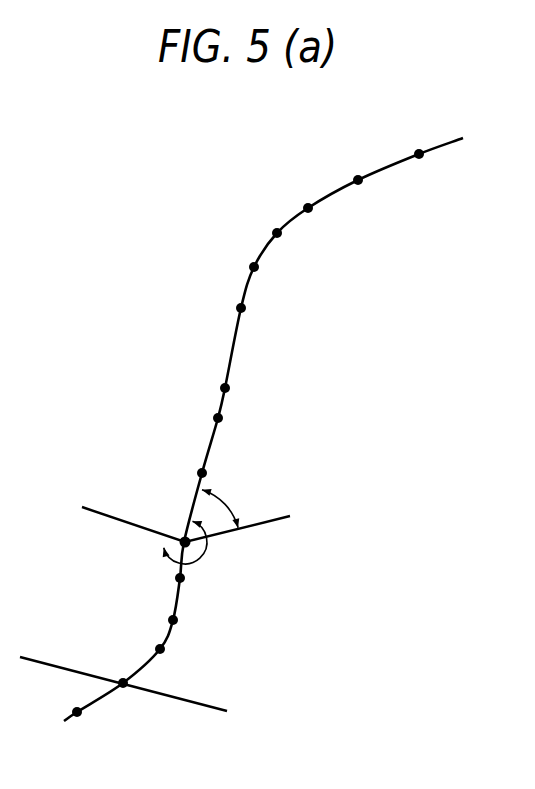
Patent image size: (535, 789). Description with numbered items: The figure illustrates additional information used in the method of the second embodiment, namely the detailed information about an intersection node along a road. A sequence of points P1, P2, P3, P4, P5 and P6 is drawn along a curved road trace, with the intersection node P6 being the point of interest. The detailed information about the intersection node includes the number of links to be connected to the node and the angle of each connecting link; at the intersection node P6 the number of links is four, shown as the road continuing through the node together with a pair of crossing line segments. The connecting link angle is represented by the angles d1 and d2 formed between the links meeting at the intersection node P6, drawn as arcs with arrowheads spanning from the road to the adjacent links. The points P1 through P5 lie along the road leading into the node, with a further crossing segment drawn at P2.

The sample point P1 is at (84, 727).
The sample point P2 is at (127, 700).
The sample point P3 is at (178, 658).
The sample point P4 is at (192, 622).
The sample point P5 is at (198, 580).
The intersection node P6 is at (171, 527).
The connecting link angle d1 is at (225, 502).
The connecting link angle d2 is at (169, 547).